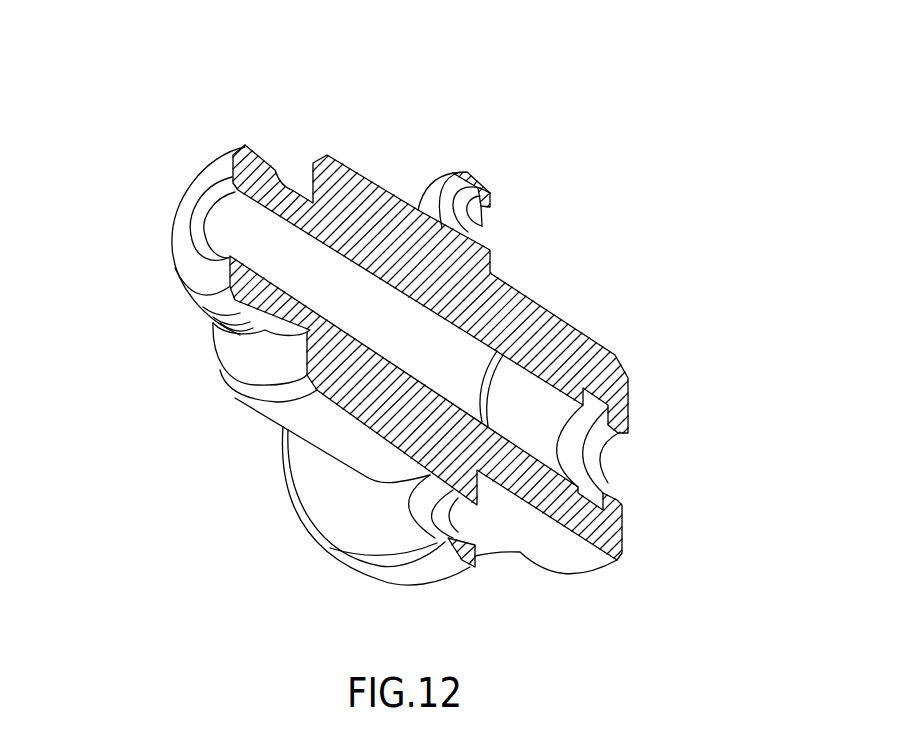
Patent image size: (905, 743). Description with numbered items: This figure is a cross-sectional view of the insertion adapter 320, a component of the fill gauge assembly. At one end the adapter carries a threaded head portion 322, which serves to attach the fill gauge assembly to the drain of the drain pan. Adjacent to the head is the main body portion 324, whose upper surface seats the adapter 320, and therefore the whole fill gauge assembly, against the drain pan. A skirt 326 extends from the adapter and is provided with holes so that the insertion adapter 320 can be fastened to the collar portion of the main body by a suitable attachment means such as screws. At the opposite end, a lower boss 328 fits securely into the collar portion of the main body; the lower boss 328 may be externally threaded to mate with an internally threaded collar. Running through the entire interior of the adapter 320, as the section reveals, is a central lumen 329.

The insertion adapter 320 is at (633, 152).
The threaded head portion 322 is at (187, 273).
The main body portion 324 is at (267, 363).
The skirt 326 is at (447, 190).
The lower boss 328 is at (580, 337).
The central lumen 329 is at (525, 412).